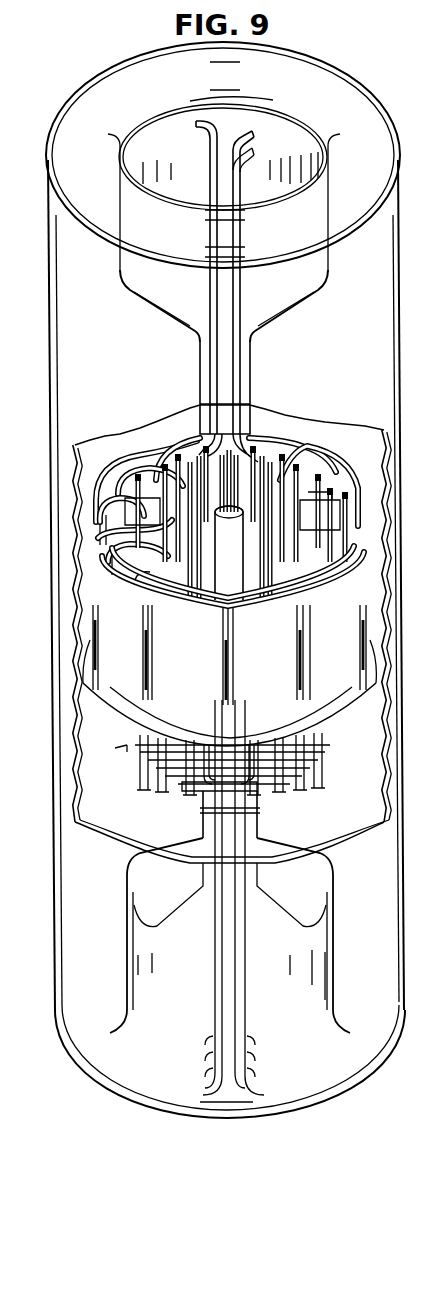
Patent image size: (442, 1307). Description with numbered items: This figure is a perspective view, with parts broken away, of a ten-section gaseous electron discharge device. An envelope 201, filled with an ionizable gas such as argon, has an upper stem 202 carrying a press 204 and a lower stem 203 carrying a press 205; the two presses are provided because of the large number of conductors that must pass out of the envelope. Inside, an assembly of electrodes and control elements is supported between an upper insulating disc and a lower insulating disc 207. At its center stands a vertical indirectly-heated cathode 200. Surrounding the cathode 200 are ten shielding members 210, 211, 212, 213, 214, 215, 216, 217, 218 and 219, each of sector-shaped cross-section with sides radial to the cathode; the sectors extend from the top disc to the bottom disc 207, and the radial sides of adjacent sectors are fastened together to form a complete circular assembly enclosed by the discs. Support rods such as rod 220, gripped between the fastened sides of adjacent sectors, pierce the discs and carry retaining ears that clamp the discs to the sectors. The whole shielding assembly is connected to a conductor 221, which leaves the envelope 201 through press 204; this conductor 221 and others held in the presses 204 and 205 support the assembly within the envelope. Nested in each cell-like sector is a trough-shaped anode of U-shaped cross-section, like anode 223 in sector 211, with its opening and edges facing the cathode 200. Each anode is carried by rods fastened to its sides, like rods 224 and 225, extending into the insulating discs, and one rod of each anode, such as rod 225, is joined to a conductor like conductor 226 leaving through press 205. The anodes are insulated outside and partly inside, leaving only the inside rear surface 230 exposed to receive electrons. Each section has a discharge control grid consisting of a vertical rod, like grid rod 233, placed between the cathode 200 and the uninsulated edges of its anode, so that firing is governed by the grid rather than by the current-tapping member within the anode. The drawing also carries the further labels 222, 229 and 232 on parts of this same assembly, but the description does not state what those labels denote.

The cathode 200 is at (229, 625).
The envelope 201 is at (398, 963).
The upper stem 202 is at (268, 318).
The lower stem 203 is at (318, 882).
The press 204 is at (250, 383).
The press 205 is at (258, 821).
The lower insulating disc 207 is at (361, 699).
The shielding member 210 is at (112, 700).
The shielding member 211 is at (100, 525).
The shielding member 212 is at (125, 463).
The shielding member 213 is at (190, 437).
The shielding member 214 is at (268, 441).
The shielding member 215 is at (350, 471).
The shielding member 216 is at (370, 522).
The shielding member 217 is at (345, 600).
The shielding member 218 is at (282, 762).
The shielding member 219 is at (145, 718).
The support rod 220 is at (233, 587).
The conductor 221 is at (237, 310).
The pipe fitting 222 is at (135, 584).
The anode 223 is at (133, 527).
The rod 224 is at (127, 512).
The rod 225 is at (112, 760).
The conductor 226 is at (134, 768).
The wall 229 is at (428, 892).
The inside rear surface 230 is at (322, 897).
The shield element 232 is at (110, 561).
The grid rod 233 is at (119, 510).